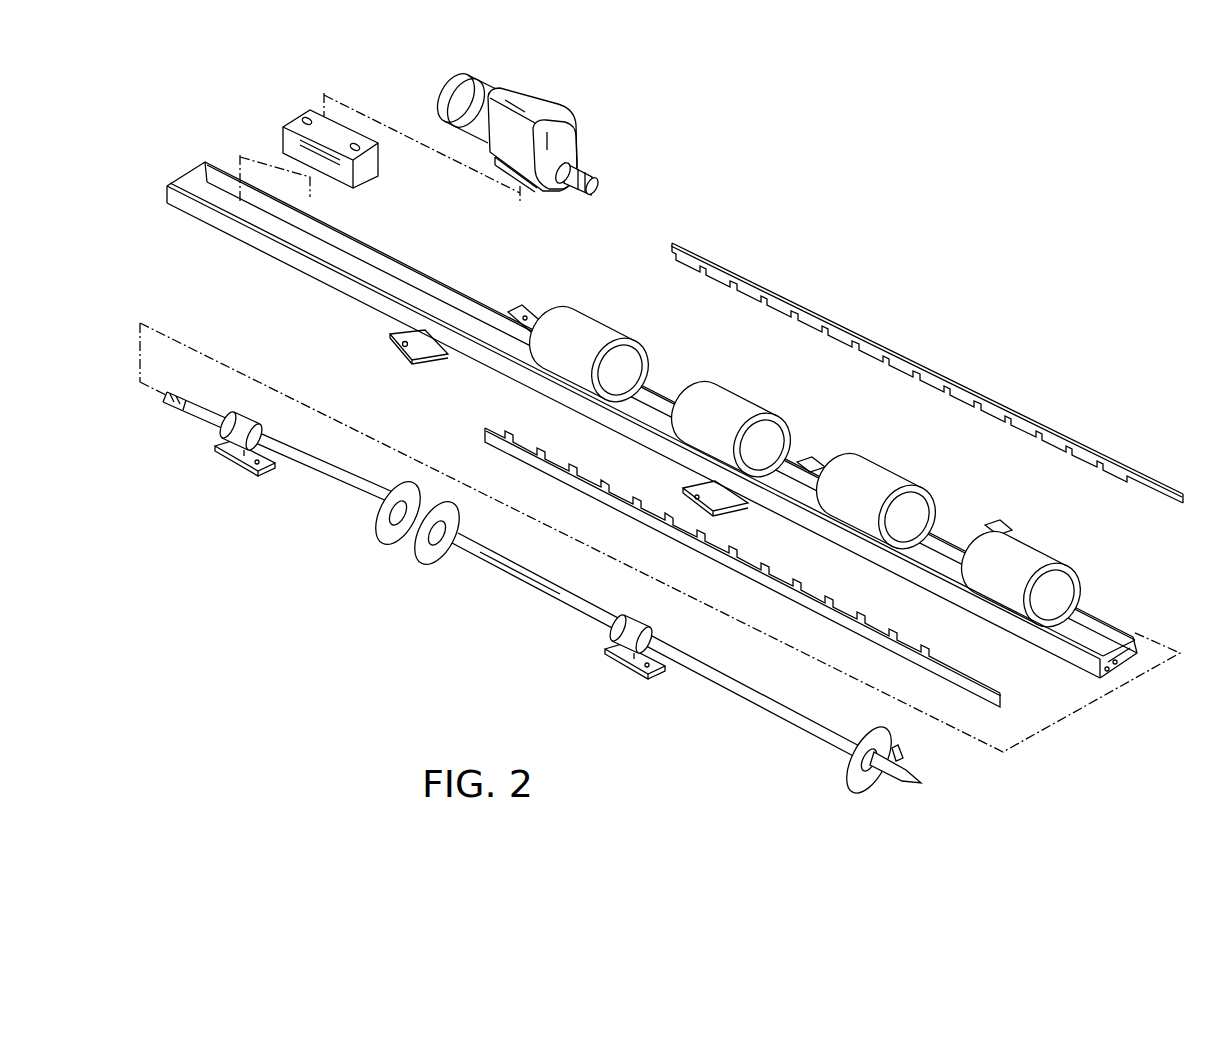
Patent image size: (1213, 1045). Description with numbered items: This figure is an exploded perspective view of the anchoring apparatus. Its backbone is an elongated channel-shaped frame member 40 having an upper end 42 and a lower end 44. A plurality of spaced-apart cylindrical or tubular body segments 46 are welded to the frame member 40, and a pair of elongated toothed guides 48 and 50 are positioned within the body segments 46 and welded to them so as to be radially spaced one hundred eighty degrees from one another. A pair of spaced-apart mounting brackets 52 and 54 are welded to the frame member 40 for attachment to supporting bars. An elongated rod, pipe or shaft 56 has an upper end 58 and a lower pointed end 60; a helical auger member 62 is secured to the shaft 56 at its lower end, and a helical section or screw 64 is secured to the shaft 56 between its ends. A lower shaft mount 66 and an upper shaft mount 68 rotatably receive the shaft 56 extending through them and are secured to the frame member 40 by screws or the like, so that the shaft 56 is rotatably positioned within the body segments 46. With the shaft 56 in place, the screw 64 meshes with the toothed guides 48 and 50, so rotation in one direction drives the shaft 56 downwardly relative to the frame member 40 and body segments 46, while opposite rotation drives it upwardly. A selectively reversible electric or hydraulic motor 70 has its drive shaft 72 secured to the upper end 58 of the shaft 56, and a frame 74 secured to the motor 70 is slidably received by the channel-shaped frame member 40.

The frame member 40 is at (439, 266).
The upper end 42 is at (185, 183).
The lower end 44 is at (1122, 662).
The body segments 46 is at (684, 378).
The toothed guide 48 is at (944, 373).
The toothed guide 50 is at (773, 586).
The mounting bracket 52 is at (742, 508).
The mounting bracket 54 is at (392, 342).
The shaft 56 is at (731, 715).
The upper end 58 is at (158, 403).
The lower pointed end 60 is at (921, 782).
The helical auger member 62 is at (848, 772).
The helical section or screw 64 is at (413, 548).
The lower shaft mount 66 is at (633, 672).
The upper shaft mount 68 is at (257, 475).
The motor 70 is at (540, 97).
The drive shaft 72 is at (575, 160).
The frame 74 is at (286, 132).